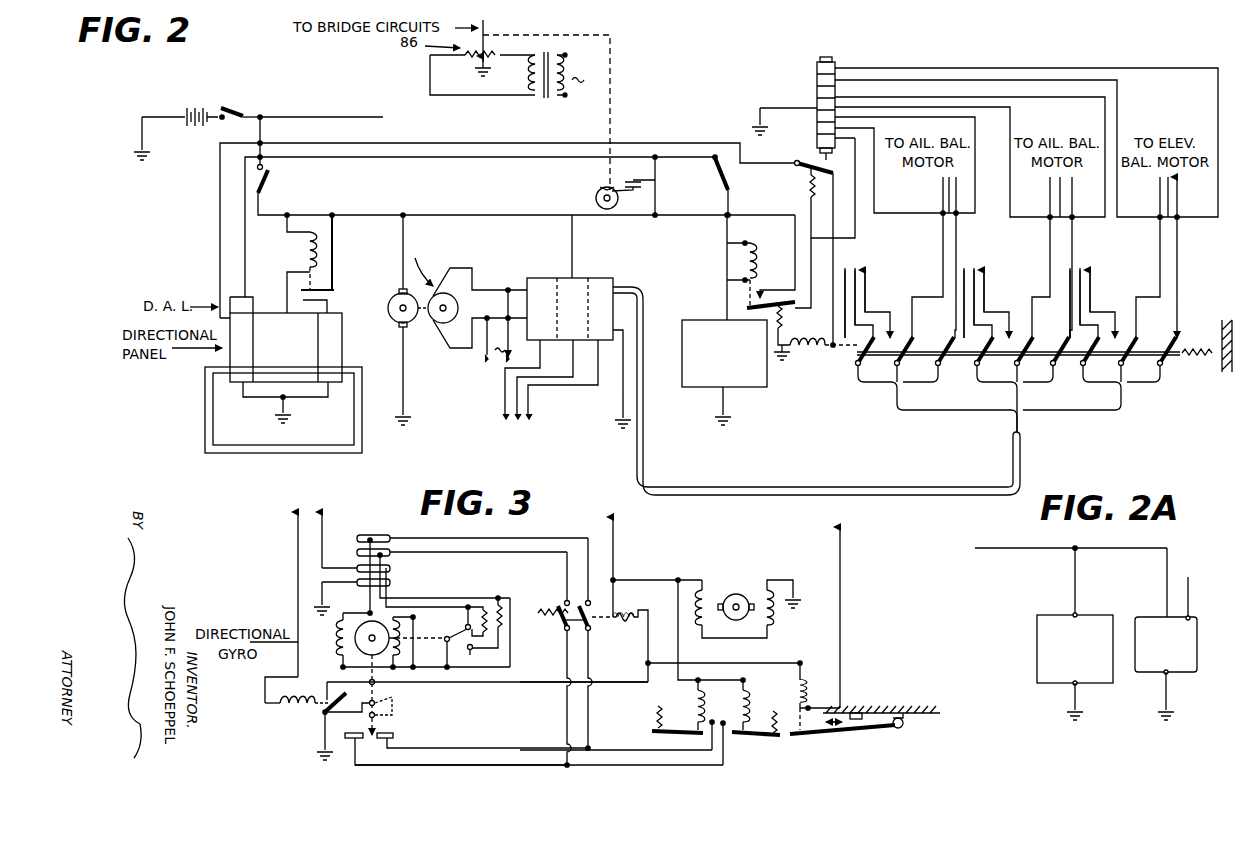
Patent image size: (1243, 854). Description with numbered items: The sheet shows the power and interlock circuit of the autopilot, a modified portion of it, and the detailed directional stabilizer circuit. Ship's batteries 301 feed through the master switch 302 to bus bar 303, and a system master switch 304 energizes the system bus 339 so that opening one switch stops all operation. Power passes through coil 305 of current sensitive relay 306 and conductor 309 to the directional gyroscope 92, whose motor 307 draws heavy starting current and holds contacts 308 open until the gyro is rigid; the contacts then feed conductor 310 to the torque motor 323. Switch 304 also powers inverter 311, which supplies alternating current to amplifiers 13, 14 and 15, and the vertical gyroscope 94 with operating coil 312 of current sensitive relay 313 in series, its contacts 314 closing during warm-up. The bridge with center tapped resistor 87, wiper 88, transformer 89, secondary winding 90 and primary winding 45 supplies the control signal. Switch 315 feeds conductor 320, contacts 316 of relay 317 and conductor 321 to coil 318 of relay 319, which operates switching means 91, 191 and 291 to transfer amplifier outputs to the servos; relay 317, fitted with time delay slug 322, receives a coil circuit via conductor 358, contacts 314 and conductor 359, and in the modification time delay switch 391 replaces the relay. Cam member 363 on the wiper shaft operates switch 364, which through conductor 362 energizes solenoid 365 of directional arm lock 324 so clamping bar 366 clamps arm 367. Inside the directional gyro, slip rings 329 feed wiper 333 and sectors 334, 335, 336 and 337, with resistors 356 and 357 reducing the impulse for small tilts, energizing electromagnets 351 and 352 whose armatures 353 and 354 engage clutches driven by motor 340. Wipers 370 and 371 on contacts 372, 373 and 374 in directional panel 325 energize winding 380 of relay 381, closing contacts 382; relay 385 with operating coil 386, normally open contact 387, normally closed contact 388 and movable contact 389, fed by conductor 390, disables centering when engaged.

In FIG. 2, the amplifier 13 is at (550, 299).
In FIG. 2, the amplifier 14 is at (580, 299).
In FIG. 2, the amplifier 15 is at (608, 299).
In FIG. 2, the primary winding 45 is at (568, 62).
In FIG. 2, the center tapped resistor 87 is at (466, 57).
In FIG. 2, the wiper 88 is at (487, 50).
In FIG. 2, the transformer 89 is at (544, 96).
In FIG. 2, the secondary winding 90 is at (525, 75).
In FIG. 2, the switching means 91 is at (845, 366).
In FIG. 2, the directional gyroscope 92 is at (278, 316).
In FIG. 2, the vertical gyroscope 94 is at (737, 385).
In FIG. 2A, the vertical gyroscope 94 is at (1058, 615).
In FIG. 2, the switching means 191 is at (975, 378).
In FIG. 2, the switching means 291 is at (1080, 378).
In FIG. 2, the batteries 301 is at (185, 113).
In FIG. 2, the master switch 302 is at (226, 106).
In FIG. 2, the bus bar 303 is at (292, 118).
In FIG. 2, the system master switch 304 is at (270, 180).
In FIG. 2, the coil 305 is at (306, 248).
In FIG. 2, the current sensitive relay 306 is at (310, 226).
In FIG. 3, the motor 307 is at (340, 640).
In FIG. 2, the contacts 308 is at (332, 295).
In FIG. 2, the conductor 309 is at (287, 273).
In FIG. 3, the conductor 309 is at (322, 520).
In FIG. 2, the conductor 310 is at (330, 304).
In FIG. 3, the conductor 310 is at (616, 530).
In FIG. 2, the inverter 311 is at (433, 333).
In FIG. 2, the operating coil 312 is at (745, 260).
In FIG. 2, the current sensitive relay 313 is at (757, 252).
In FIG. 2, the contacts 314 is at (745, 304).
In FIG. 2, the switch 315 is at (734, 182).
In FIG. 2, the contacts 316 is at (810, 186).
In FIG. 2, the relay 317 is at (813, 62).
In FIG. 2, the operating coil 318 is at (802, 344).
In FIG. 2, the relay 319 is at (793, 352).
In FIG. 2, the conductor 320 is at (793, 166).
In FIG. 2, the conductor 321 is at (826, 218).
In FIG. 2, the time delay slug 322 is at (815, 150).
In FIG. 2, the torque motor 323 is at (333, 321).
In FIG. 2, the directional arm lock 324 is at (240, 298).
In FIG. 2, the directional panel 325 is at (230, 360).
In FIG. 3, the slip rings 329 is at (360, 538).
In FIG. 3, the wiper 333 is at (447, 641).
In FIG. 3, the sector 334 is at (465, 660).
In FIG. 3, the sector 335 is at (467, 660).
In FIG. 3, the sector 336 is at (465, 628).
In FIG. 3, the sector 337 is at (466, 623).
In FIG. 2, the system bus 339 is at (455, 214).
In FIG. 2A, the system bus 339 is at (1040, 547).
In FIG. 3, the motor 340 is at (782, 610).
In FIG. 3, the electromagnet 351 is at (698, 702).
In FIG. 3, the electromagnet 352 is at (747, 700).
In FIG. 3, the armature 353 is at (688, 737).
In FIG. 3, the armature 354 is at (760, 738).
In FIG. 3, the resistor 356 is at (500, 602).
In FIG. 3, the resistor 357 is at (483, 605).
In FIG. 2, the conductor 358 is at (855, 236).
In FIG. 2A, the conductor 358 is at (1190, 594).
In FIG. 2, the conductor 359 is at (795, 270).
In FIG. 2A, the conductor 359 is at (1165, 578).
In FIG. 2, the conductor 362 is at (340, 158).
In FIG. 3, the conductor 362 is at (840, 580).
In FIG. 2, the cam member 363 is at (596, 198).
In FIG. 2, the switch 364 is at (645, 181).
In FIG. 3, the solenoid 365 is at (803, 680).
In FIG. 3, the clamping bar 366 is at (815, 737).
In FIG. 3, the arm 367 is at (848, 712).
In FIG. 3, the wiper 370 is at (376, 716).
In FIG. 3, the wiper 371 is at (375, 683).
In FIG. 3, the contact 372 is at (345, 736).
In FIG. 3, the contact 373 is at (385, 736).
In FIG. 3, the contact 374 is at (376, 703).
In FIG. 3, the winding 380 is at (620, 615).
In FIG. 3, the relay 381 is at (598, 622).
In FIG. 3, the contacts 382 is at (562, 620).
In FIG. 3, the relay 385 is at (280, 708).
In FIG. 3, the operating coil 386 is at (310, 702).
In FIG. 3, the normally open contact 387 is at (332, 690).
In FIG. 3, the normally closed contact 388 is at (348, 692).
In FIG. 3, the movable contact 389 is at (325, 714).
In FIG. 2, the conductor 390 is at (220, 192).
In FIG. 3, the conductor 390 is at (298, 575).
In FIG. 2A, the time delay switch 391 is at (1150, 617).